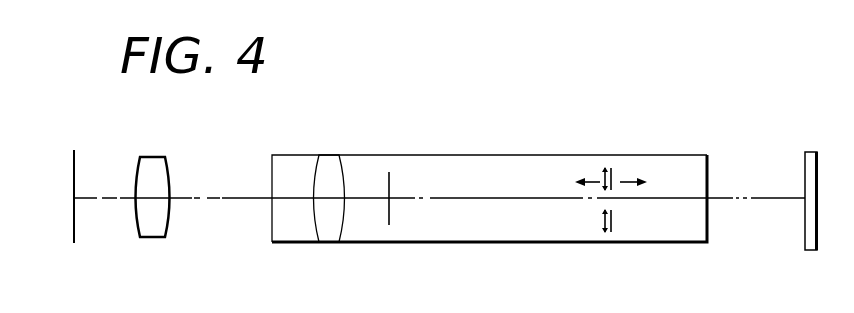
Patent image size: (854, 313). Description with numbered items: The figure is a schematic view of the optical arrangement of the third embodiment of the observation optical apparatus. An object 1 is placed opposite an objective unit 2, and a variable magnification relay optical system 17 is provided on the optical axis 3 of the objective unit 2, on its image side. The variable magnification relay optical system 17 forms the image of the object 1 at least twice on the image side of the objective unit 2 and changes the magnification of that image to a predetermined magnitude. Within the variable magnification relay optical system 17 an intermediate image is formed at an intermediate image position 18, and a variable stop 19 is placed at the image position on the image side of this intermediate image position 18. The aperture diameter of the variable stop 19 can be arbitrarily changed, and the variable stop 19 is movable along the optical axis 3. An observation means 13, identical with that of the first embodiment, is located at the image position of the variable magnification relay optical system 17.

The object 1 is at (72, 150).
The objective unit 2 is at (157, 157).
The optical axis 3 is at (217, 202).
The observation means 13 is at (805, 167).
The variable magnification relay optical system 17 is at (498, 242).
The intermediate image position 18 is at (392, 177).
The variable stop 19 is at (614, 170).